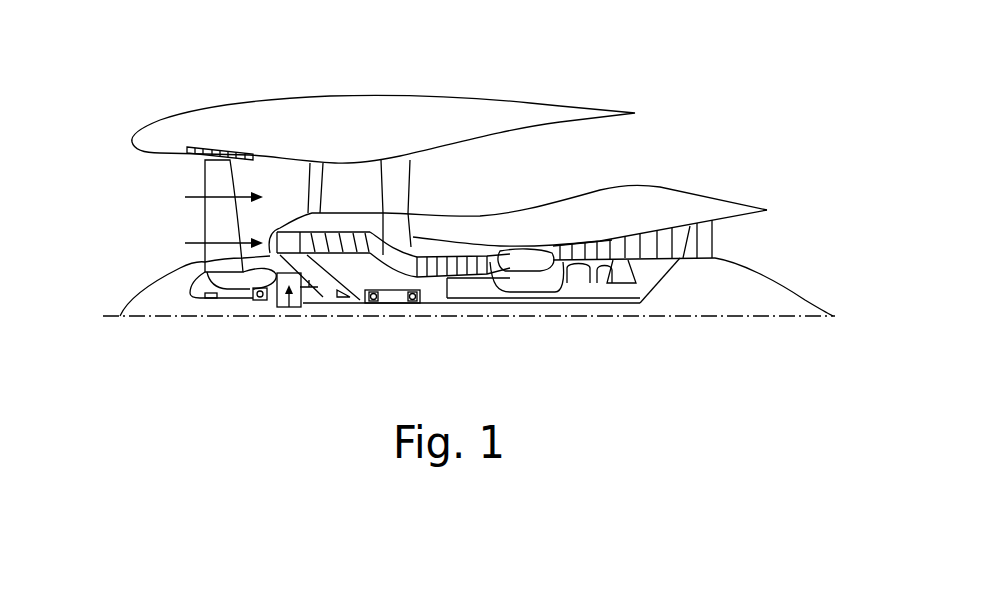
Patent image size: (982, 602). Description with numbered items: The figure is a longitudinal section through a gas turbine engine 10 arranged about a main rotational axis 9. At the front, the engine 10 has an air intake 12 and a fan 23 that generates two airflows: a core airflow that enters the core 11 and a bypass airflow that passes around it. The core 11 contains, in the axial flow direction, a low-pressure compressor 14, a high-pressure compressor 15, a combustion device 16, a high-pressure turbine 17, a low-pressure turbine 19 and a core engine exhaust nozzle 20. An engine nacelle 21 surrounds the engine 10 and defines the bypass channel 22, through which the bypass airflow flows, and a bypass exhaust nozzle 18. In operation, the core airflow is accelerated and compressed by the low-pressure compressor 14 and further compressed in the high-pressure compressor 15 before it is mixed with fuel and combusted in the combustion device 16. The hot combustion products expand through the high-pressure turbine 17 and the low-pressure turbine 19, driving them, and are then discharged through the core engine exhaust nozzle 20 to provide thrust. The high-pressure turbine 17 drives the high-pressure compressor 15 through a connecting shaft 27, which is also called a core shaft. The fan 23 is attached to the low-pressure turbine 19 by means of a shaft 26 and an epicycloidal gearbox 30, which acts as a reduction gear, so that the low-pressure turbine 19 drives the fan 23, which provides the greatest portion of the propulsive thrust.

The main rotational axis 9 is at (738, 318).
The gas turbine engine 10 is at (182, 109).
The core 11 is at (540, 228).
The air intake 12 is at (138, 173).
The low-pressure compressor 14 is at (345, 240).
The high-pressure compressor 15 is at (467, 262).
The combustion device 16 is at (528, 268).
The high-pressure turbine 17 is at (583, 242).
The bypass exhaust nozzle 18 is at (727, 108).
The low-pressure turbine 19 is at (693, 247).
The core engine exhaust nozzle 20 is at (778, 243).
The engine nacelle 21 is at (393, 107).
The bypass channel 22 is at (628, 150).
The fan 23 is at (210, 230).
The shaft 26 is at (436, 304).
The connecting shaft 27 is at (492, 302).
The epicycloidal gearbox 30 is at (288, 309).